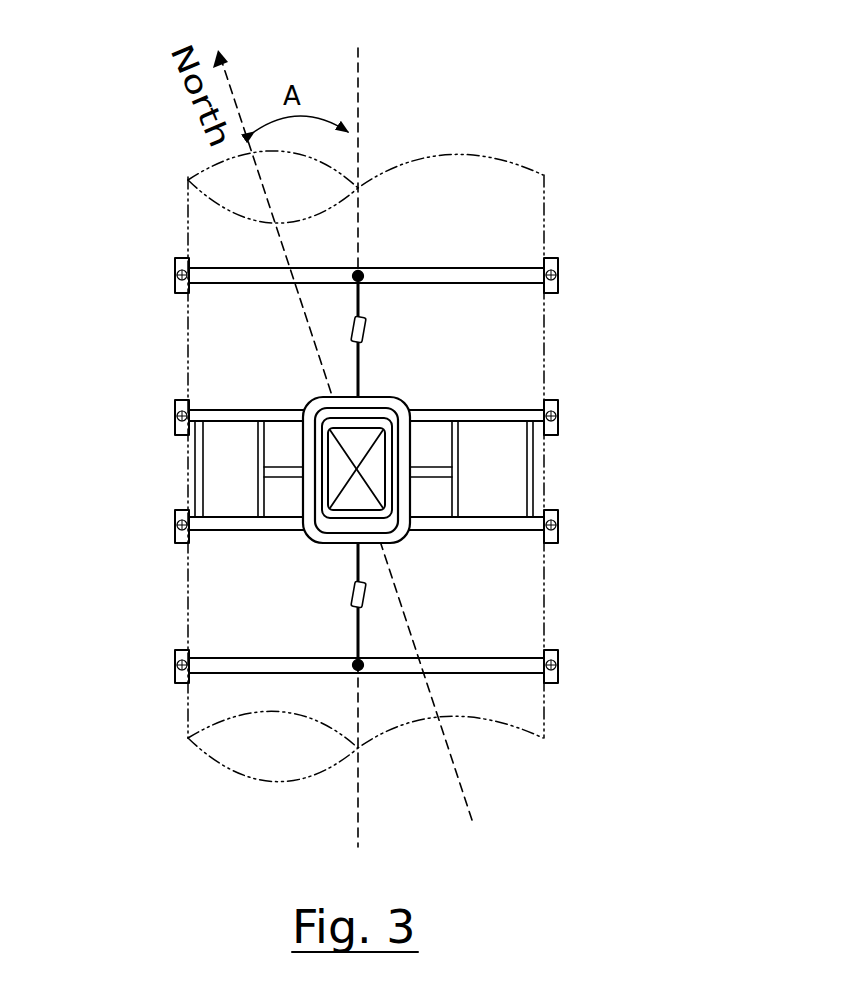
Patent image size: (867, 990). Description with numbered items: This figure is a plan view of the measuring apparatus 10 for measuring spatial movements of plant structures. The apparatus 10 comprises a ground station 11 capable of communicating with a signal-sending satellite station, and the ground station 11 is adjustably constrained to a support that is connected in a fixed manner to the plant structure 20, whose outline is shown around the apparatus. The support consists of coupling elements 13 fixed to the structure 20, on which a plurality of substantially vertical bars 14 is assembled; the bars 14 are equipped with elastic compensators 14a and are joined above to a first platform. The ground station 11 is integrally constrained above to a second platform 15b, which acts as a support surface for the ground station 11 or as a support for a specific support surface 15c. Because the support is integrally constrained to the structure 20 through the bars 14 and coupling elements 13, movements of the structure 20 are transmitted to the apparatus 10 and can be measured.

The measuring apparatus 10 is at (378, 437).
The ground station 11 is at (297, 512).
The coupling elements 13 is at (574, 407).
The vertical bars 14 is at (282, 472).
The elastic compensators 14a is at (362, 363).
The second platform 15b is at (410, 532).
The support surface 15c is at (393, 503).
The plant structure 20 is at (513, 205).